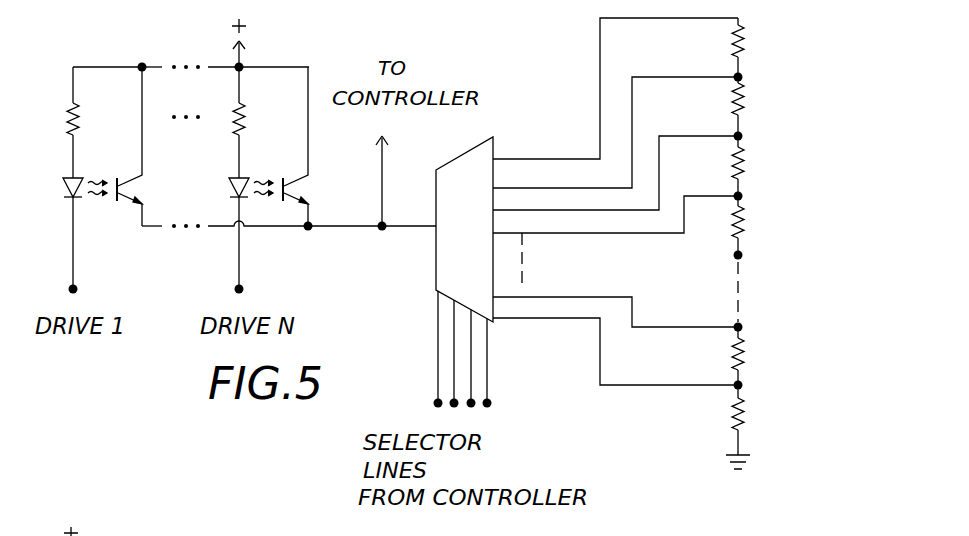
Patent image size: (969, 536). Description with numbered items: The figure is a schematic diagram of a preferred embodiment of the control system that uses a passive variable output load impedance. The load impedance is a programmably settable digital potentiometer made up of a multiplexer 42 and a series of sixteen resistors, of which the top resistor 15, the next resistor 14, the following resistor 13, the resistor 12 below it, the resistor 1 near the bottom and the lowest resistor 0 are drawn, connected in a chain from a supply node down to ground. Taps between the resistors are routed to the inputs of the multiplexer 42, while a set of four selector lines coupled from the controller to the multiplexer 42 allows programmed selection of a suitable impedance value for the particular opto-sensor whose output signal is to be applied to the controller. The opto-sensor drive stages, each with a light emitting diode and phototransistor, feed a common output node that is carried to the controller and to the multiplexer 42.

The multiplexer 42 is at (493, 137).
The resistor R15 15 is at (763, 47).
The resistor R14 14 is at (763, 106).
The resistor R13 13 is at (763, 166).
The resistor R12 12 is at (763, 225).
The resistor R1 1 is at (757, 356).
The resistor R0 0 is at (757, 420).